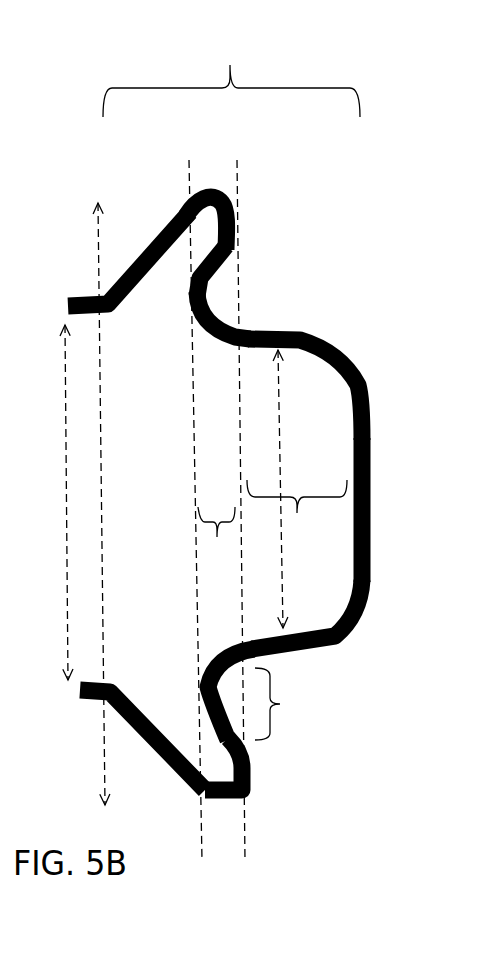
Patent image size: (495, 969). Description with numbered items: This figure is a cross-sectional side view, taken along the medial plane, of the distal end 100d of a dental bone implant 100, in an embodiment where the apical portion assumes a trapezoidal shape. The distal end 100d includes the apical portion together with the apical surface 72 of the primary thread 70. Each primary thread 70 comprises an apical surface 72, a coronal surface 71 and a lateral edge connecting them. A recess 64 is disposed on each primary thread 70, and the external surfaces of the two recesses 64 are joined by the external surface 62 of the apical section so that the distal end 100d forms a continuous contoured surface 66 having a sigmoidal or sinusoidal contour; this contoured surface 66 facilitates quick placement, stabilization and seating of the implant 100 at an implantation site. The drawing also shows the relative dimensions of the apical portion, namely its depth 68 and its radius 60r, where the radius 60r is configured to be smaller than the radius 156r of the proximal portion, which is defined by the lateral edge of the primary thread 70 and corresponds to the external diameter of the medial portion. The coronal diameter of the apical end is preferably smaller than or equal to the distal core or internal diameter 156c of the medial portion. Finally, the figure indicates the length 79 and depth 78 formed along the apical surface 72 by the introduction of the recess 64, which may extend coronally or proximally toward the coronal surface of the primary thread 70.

The implant 100 is at (402, 310).
The distal end 100d is at (231, 71).
The primary thread 70 is at (267, 165).
The coronal surface 71 is at (170, 230).
The apical surface 72 is at (255, 258).
The recess 64 is at (210, 300).
The continuous contoured surface 66 is at (392, 415).
The external surface 62 is at (372, 507).
The radius 60r is at (279, 432).
The depth 68 is at (297, 517).
The depth 78 is at (217, 510).
The length 79 is at (295, 704).
The distal core diameter 156c is at (67, 495).
The external diameter 156r is at (102, 455).